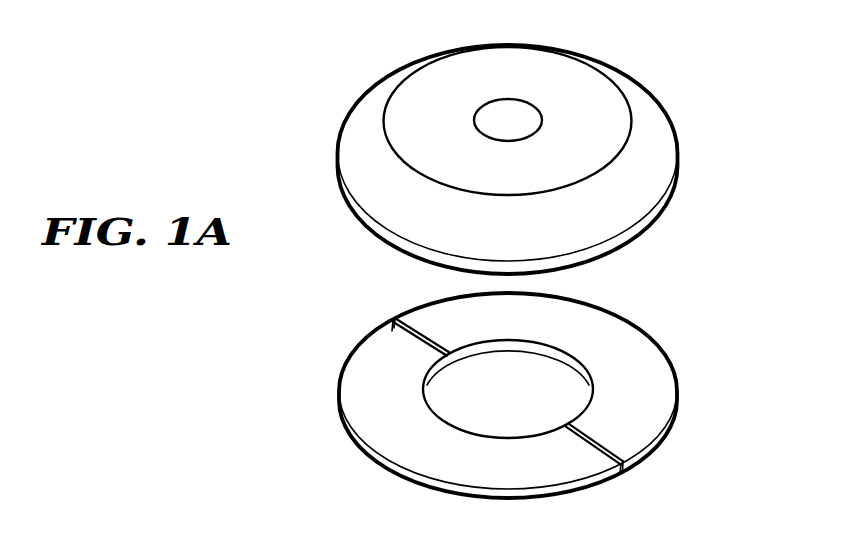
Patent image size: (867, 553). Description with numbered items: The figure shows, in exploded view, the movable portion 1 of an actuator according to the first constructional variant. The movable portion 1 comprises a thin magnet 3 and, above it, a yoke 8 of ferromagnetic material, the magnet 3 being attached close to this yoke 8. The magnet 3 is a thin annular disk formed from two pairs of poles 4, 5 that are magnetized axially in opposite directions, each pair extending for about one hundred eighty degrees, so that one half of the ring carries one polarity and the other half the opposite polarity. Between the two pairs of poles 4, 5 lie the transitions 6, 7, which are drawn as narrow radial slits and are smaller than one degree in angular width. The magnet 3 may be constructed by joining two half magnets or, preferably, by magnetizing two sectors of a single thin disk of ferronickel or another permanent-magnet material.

The movable portion 1 is at (785, 34).
The thin magnet 3 is at (232, 402).
The pair of poles 4 is at (364, 357).
The pair of poles 5 is at (640, 353).
The transition 6 is at (394, 320).
The transition 7 is at (627, 463).
The yoke 8 is at (571, 77).